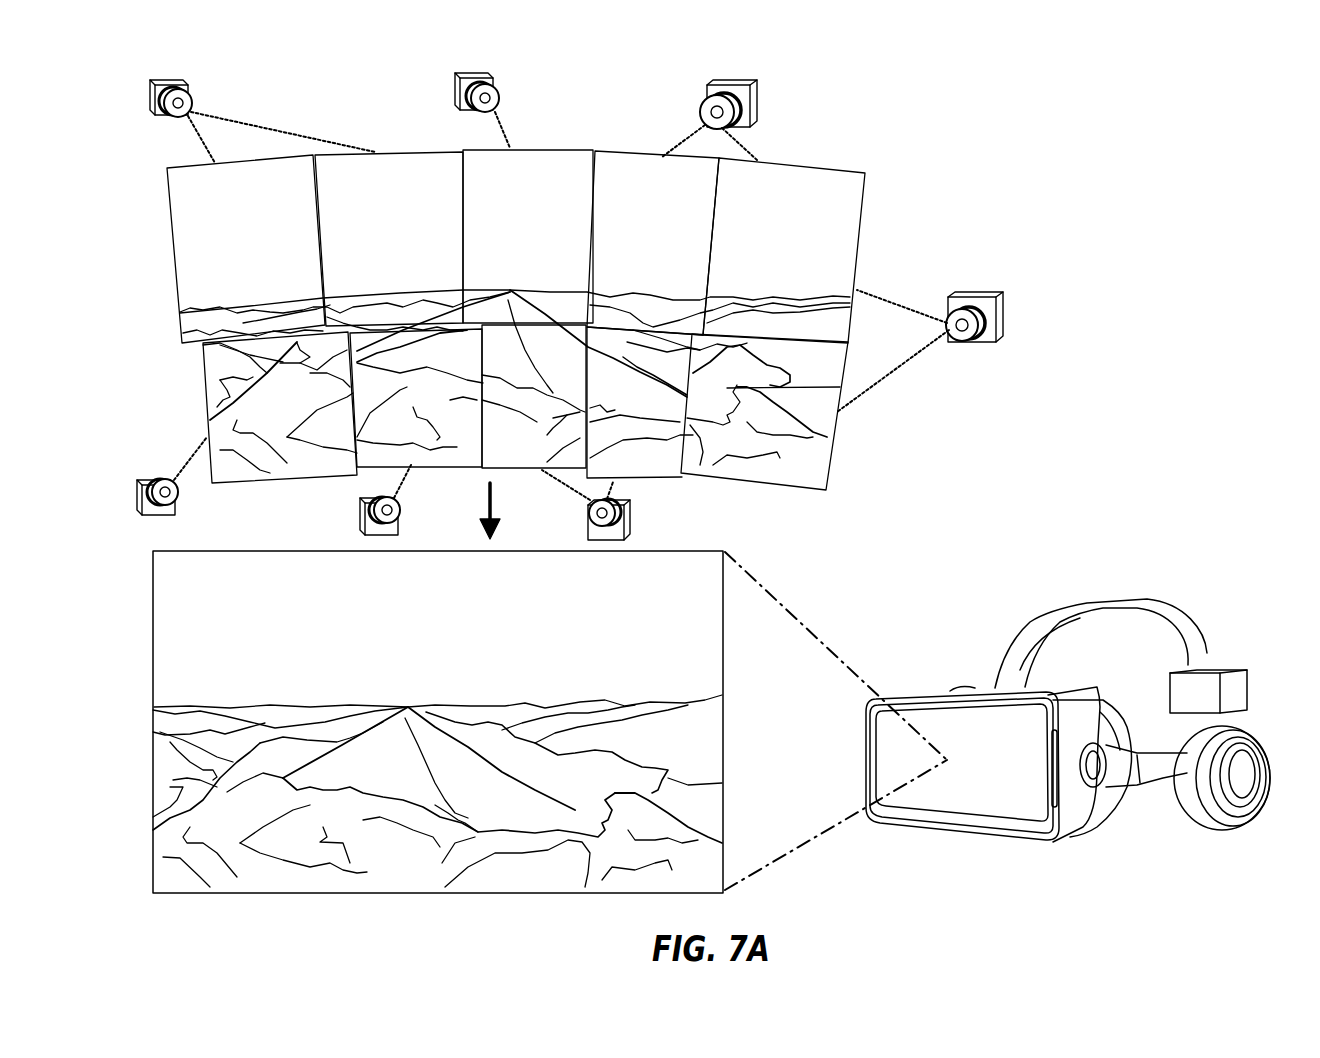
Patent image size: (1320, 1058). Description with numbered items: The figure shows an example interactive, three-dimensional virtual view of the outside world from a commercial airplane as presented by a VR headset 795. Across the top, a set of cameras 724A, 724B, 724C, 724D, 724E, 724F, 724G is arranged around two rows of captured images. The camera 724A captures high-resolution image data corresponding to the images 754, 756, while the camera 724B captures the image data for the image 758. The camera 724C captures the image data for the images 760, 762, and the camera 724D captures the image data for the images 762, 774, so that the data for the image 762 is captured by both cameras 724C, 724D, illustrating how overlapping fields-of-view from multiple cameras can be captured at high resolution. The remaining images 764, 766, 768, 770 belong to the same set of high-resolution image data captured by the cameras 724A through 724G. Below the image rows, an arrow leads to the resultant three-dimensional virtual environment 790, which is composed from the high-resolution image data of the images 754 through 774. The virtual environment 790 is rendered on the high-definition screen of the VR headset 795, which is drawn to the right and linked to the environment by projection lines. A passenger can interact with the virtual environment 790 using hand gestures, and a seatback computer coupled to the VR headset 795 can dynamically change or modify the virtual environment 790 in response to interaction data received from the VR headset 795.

The camera 724A is at (256, 107).
The camera 724B is at (483, 93).
The camera 724C is at (739, 110).
The camera 724D is at (922, 351).
The camera 724E is at (617, 505).
The camera 724F is at (410, 500).
The camera 724G is at (183, 479).
The image 754 is at (249, 240).
The image 756 is at (403, 240).
The image 758 is at (538, 238).
The image 760 is at (667, 244).
The image 762 is at (795, 242).
The image 764 is at (286, 418).
The image 766 is at (439, 402).
The image 768 is at (571, 373).
The image 770 is at (658, 365).
The image 774 is at (822, 377).
The 3D virtual environment 790 is at (437, 634).
The VR headset 795 is at (935, 700).